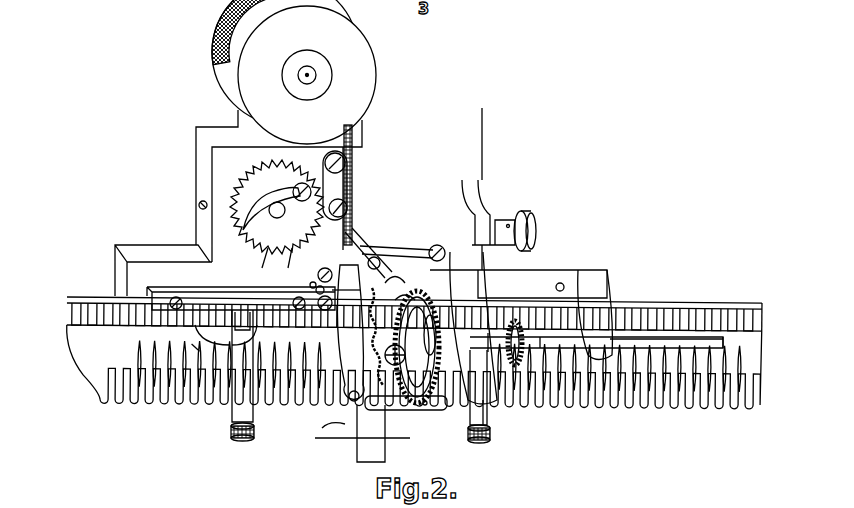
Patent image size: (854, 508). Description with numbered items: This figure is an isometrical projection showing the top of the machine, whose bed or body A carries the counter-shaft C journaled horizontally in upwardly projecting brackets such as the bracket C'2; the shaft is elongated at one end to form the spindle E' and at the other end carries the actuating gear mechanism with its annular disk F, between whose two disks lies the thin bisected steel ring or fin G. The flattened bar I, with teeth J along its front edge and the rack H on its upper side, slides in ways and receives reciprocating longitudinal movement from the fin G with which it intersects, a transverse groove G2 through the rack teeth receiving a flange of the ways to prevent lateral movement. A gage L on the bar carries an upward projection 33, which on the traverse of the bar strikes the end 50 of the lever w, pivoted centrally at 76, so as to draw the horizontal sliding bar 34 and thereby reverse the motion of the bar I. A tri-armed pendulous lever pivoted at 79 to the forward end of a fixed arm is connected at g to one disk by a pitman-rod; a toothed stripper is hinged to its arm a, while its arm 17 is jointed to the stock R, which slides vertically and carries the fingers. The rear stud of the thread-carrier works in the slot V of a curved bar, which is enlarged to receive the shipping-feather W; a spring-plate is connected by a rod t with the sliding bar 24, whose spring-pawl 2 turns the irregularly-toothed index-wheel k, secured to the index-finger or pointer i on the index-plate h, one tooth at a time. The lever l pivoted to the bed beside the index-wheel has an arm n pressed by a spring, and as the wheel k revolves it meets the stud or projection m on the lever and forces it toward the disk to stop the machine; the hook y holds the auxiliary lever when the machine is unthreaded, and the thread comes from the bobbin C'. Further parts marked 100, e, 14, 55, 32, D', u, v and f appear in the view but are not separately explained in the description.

The bobbin C' is at (307, 75).
The bed piece A is at (238, 203).
The screw 100 is at (195, 201).
The index-plate h is at (277, 207).
The index-finger i is at (271, 210).
The index-wheel k is at (292, 191).
The stud m is at (305, 203).
The lever l is at (335, 185).
The screw e is at (345, 163).
The arm n is at (332, 222).
The sliding bar 24 is at (259, 265).
The spring-pawl 2 is at (285, 265).
The bar 14 is at (241, 298).
The rack H is at (66, 312).
The groove G2 is at (762, 312).
The flattened bar I is at (85, 362).
The teeth J is at (431, 377).
The tines 55 is at (435, 362).
The lever end 50 is at (251, 341).
The gage L is at (341, 367).
The upward projection 33 is at (241, 332).
The nut 32 is at (360, 442).
The knob shaft D' is at (509, 189).
The stock R is at (518, 202).
The bracket C'2 is at (519, 338).
The counter-shaft C is at (596, 343).
The spindle E' is at (666, 346).
The ring or fin G is at (417, 339).
The connection point g is at (422, 334).
The annular disk F is at (396, 351).
The slot V is at (395, 282).
The shipping-feather W is at (405, 293).
The rod t is at (395, 253).
The hook y is at (350, 333).
The screw u is at (335, 273).
The lever w is at (325, 297).
The arm v is at (351, 285).
The horizontal sliding bar 34 is at (316, 287).
The pivot 76 is at (310, 297).
The pivot 79 is at (406, 412).
The arm a is at (368, 441).
The arm 17 is at (363, 446).
The spring f is at (331, 442).